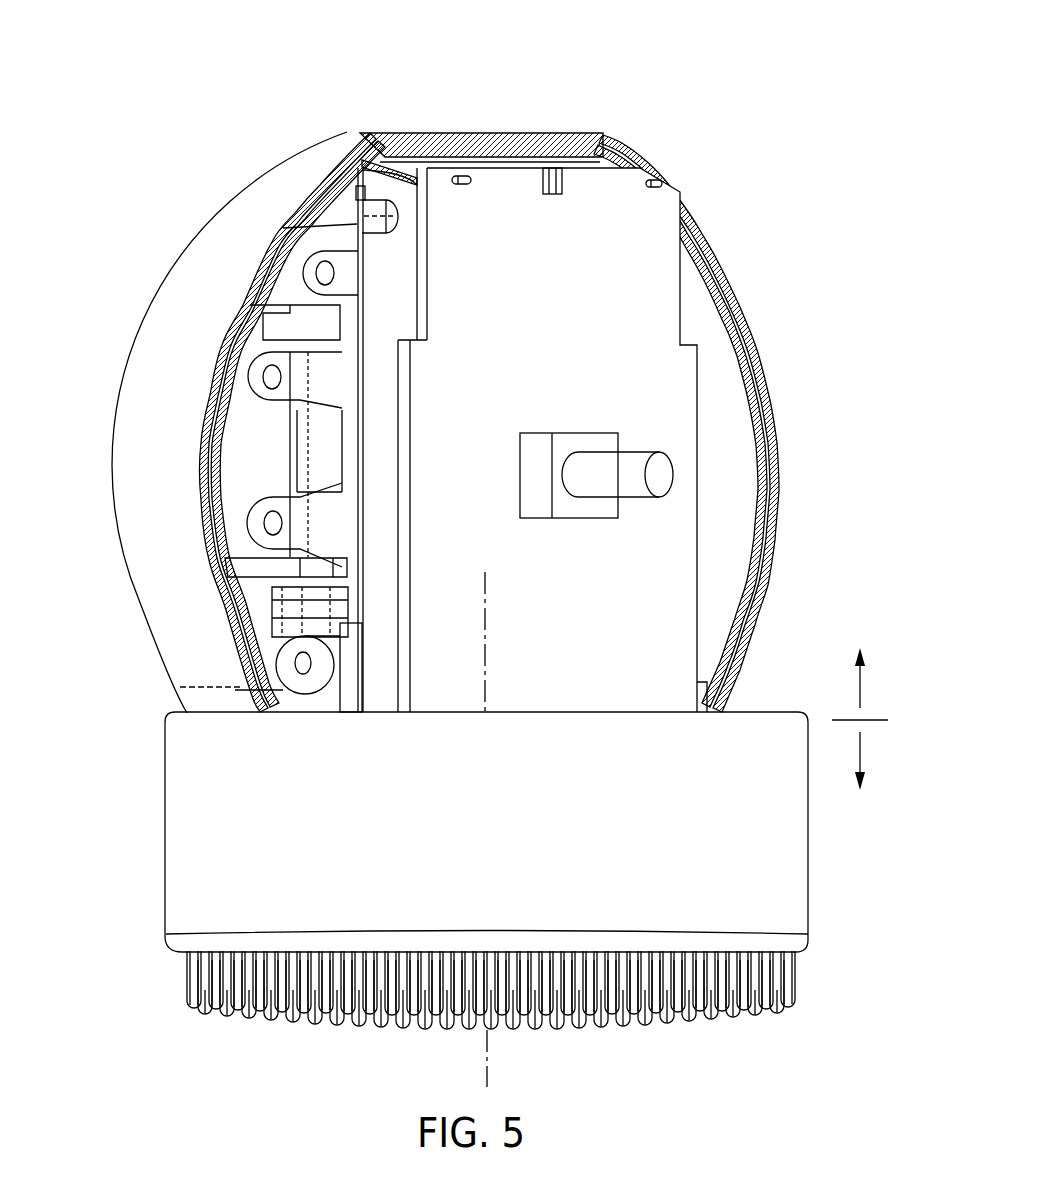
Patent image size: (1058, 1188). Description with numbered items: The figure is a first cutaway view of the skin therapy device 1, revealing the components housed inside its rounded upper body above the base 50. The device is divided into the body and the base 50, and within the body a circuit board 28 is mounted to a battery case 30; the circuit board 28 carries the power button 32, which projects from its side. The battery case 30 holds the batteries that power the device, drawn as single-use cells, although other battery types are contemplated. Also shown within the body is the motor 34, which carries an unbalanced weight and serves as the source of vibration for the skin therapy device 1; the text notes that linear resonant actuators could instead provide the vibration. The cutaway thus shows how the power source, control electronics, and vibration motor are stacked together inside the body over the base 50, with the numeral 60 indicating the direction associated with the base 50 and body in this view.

The skin therapy device 1 is at (692, 78).
The circuit board 28 is at (623, 273).
The battery case 30 is at (393, 263).
The power button 32 is at (647, 488).
The motor 34 is at (319, 448).
The base 50 is at (862, 758).
The upward direction 60 is at (862, 692).